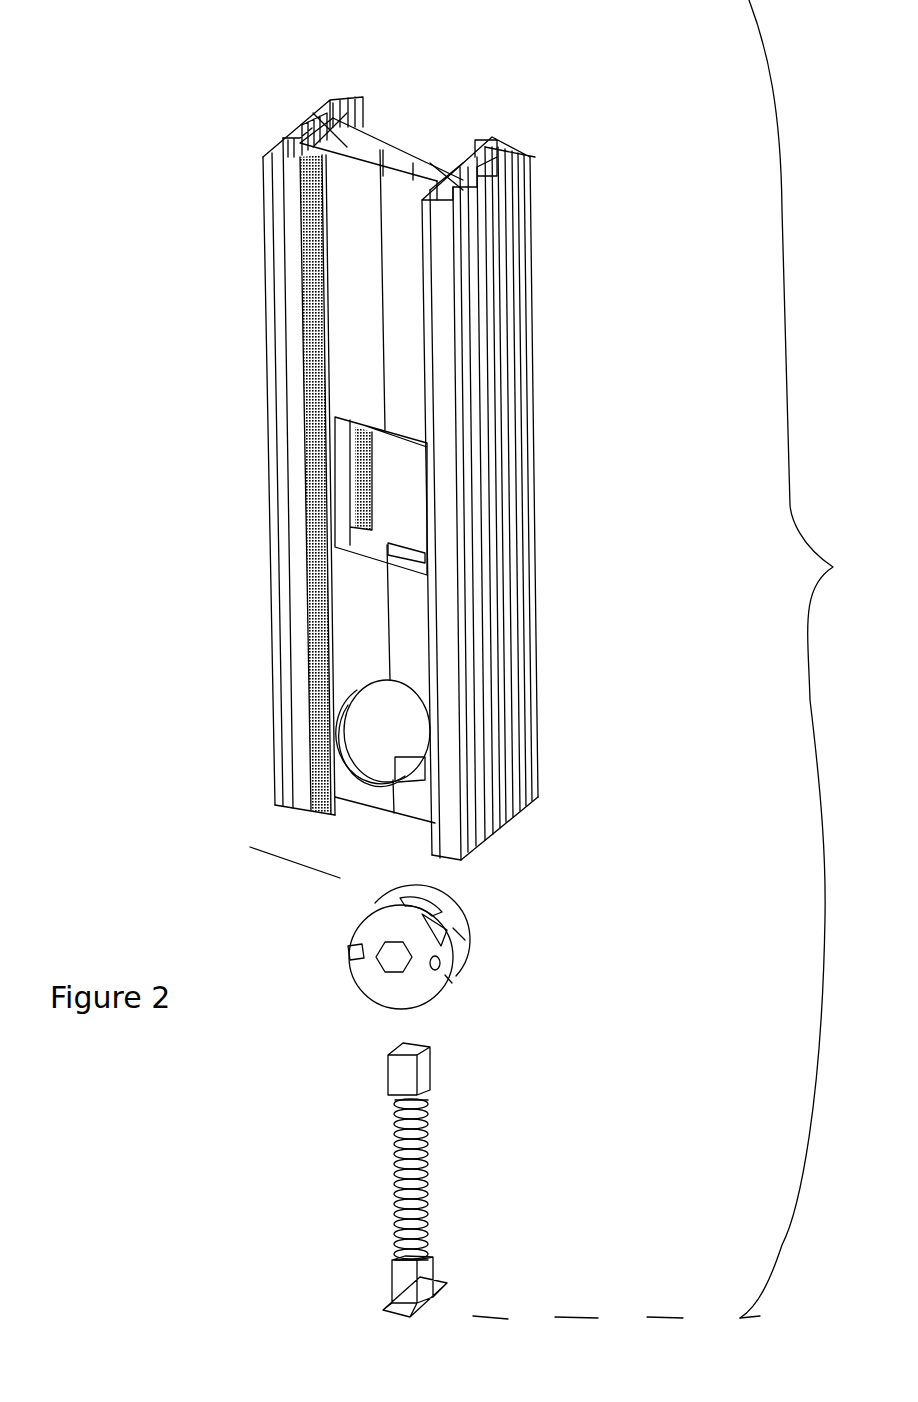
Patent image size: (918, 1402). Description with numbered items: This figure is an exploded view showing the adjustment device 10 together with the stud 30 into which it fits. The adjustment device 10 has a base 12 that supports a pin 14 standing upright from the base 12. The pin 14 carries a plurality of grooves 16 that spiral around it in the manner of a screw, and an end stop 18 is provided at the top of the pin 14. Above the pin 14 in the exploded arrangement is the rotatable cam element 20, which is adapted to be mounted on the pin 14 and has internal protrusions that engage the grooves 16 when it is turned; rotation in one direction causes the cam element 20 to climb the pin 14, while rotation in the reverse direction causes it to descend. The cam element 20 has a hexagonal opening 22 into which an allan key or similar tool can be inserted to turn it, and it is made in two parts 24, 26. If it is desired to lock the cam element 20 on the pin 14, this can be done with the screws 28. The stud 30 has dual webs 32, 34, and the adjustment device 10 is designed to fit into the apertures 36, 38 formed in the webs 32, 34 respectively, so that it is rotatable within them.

The adjustment device 10 is at (675, 1083).
The base 12 is at (383, 1305).
The pin 14 is at (395, 1222).
The grooves 16 is at (435, 1100).
The end stop 18 is at (388, 1067).
The rotatable cam element 20 is at (554, 928).
The hexagonal opening 22 is at (398, 958).
The first part of cam element 24 is at (378, 896).
The second part of cam element 26 is at (352, 920).
The screws 28 is at (350, 951).
The stud 30 is at (639, 405).
The web 32 is at (370, 130).
The web 34 is at (440, 180).
The aperture 36 is at (352, 704).
The aperture 38 is at (356, 752).